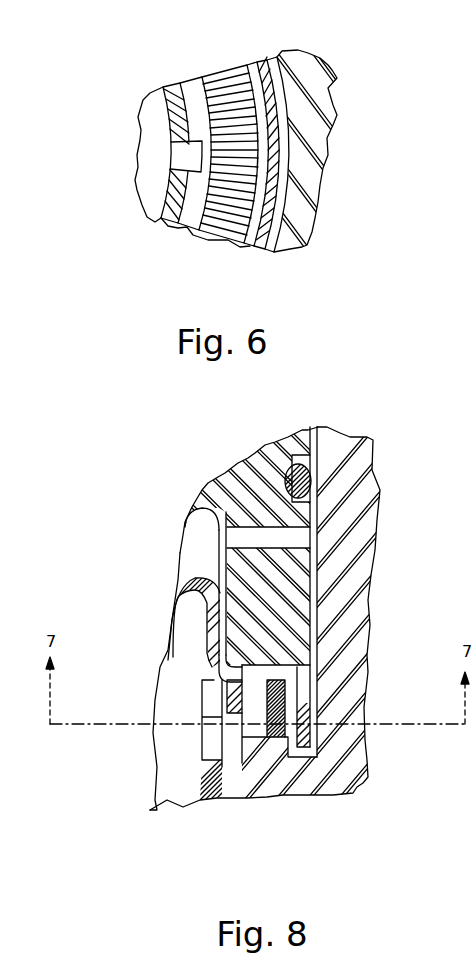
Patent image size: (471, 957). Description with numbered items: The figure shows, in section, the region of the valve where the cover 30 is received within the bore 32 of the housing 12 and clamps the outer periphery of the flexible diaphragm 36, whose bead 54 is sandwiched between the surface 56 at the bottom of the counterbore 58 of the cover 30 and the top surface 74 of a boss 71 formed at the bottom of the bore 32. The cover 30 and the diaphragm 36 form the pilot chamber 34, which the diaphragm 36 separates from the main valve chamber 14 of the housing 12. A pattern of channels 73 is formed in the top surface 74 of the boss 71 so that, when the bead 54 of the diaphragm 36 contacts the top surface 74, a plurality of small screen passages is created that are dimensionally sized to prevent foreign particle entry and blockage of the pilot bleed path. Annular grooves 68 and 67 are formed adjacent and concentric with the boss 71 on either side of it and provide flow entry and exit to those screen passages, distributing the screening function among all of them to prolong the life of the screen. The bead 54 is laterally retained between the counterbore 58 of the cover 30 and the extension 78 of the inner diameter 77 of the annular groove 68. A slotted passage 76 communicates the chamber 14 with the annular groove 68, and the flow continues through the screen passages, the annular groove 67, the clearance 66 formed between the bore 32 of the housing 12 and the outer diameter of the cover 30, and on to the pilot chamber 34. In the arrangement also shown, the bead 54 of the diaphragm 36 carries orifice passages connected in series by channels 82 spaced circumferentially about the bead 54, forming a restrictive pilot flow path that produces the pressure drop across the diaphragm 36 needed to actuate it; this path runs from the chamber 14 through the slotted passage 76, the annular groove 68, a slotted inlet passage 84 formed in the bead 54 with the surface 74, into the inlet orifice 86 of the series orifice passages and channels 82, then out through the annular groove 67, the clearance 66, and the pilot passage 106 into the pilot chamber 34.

In FIG. 6, the housing 12 is at (327, 137).
In FIG. 8, the housing 12 is at (343, 768).
In FIG. 6, the main valve chamber 14 is at (152, 190).
In FIG. 8, the main valve chamber 14 is at (167, 797).
In FIG. 6, the cover 30 is at (268, 250).
In FIG. 8, the cover 30 is at (218, 478).
In FIG. 6, the bore 32 is at (283, 110).
In FIG. 8, the bore 32 is at (318, 728).
In FIG. 8, the pilot chamber 34 is at (198, 543).
In FIG. 8, the flexible diaphragm 36 is at (178, 563).
In FIG. 8, the bead 54 is at (300, 702).
In FIG. 8, the surface 56 is at (262, 672).
In FIG. 6, the counterbore 58 is at (252, 227).
In FIG. 8, the counterbore 58 is at (275, 700).
In FIG. 6, the clearance 66 is at (268, 60).
In FIG. 8, the clearance 66 is at (313, 572).
In FIG. 6, the annular groove 67 is at (251, 62).
In FIG. 8, the annular groove 67 is at (308, 755).
In FIG. 6, the annular groove 68 is at (187, 220).
In FIG. 8, the annular groove 68 is at (232, 752).
In FIG. 6, the boss 71 is at (195, 75).
In FIG. 8, the boss 71 is at (297, 755).
In FIG. 6, the channels 73 is at (227, 90).
In FIG. 6, the top surface 74 is at (250, 162).
In FIG. 8, the top surface 74 is at (247, 740).
In FIG. 6, the slotted passage 76 is at (180, 153).
In FIG. 8, the slotted passage 76 is at (213, 752).
In FIG. 6, the inner diameter 77 is at (187, 115).
In FIG. 8, the inner diameter 77 is at (203, 699).
In FIG. 8, the extension 78 is at (240, 667).
In FIG. 8, the channels 82 is at (254, 688).
In FIG. 8, the slotted inlet passage 84 is at (203, 727).
In FIG. 8, the inlet orifice 86 is at (292, 692).
In FIG. 8, the pilot passage 106 is at (333, 513).